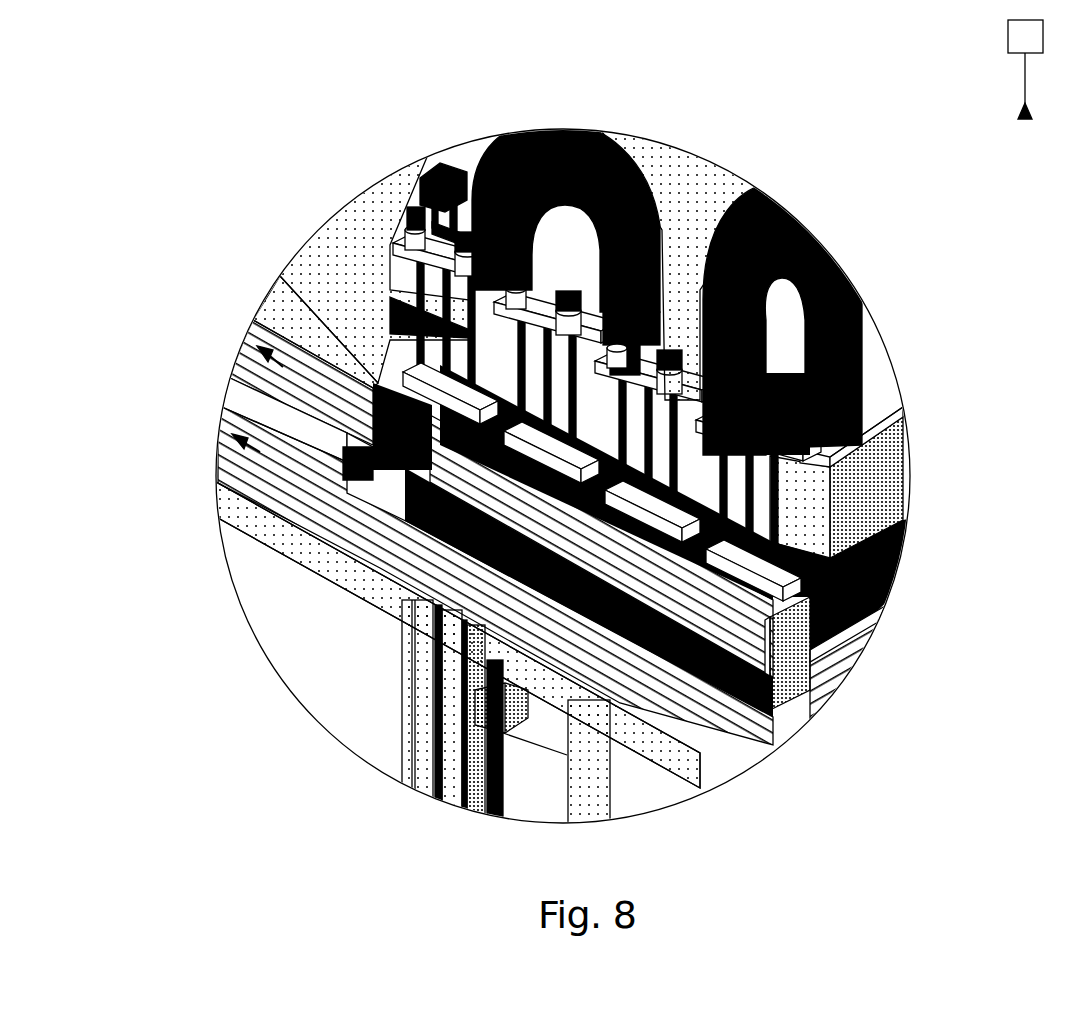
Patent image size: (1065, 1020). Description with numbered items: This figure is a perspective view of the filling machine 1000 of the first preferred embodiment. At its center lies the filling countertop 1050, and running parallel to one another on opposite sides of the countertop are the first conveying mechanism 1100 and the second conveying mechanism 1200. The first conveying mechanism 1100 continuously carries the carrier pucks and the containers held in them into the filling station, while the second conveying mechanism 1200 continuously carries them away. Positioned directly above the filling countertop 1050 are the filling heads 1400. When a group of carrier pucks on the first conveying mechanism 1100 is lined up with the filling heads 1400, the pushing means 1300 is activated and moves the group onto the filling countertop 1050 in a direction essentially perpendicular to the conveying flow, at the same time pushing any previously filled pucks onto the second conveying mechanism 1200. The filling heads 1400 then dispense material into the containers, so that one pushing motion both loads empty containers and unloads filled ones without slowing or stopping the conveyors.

The filling machine 1000 is at (1025, 69).
The filling countertop 1050 is at (343, 462).
The first conveying mechanism 1100 is at (262, 347).
The second conveying mechanism 1200 is at (222, 440).
The pushing means 1300 is at (903, 525).
The filling heads 1400 is at (860, 428).